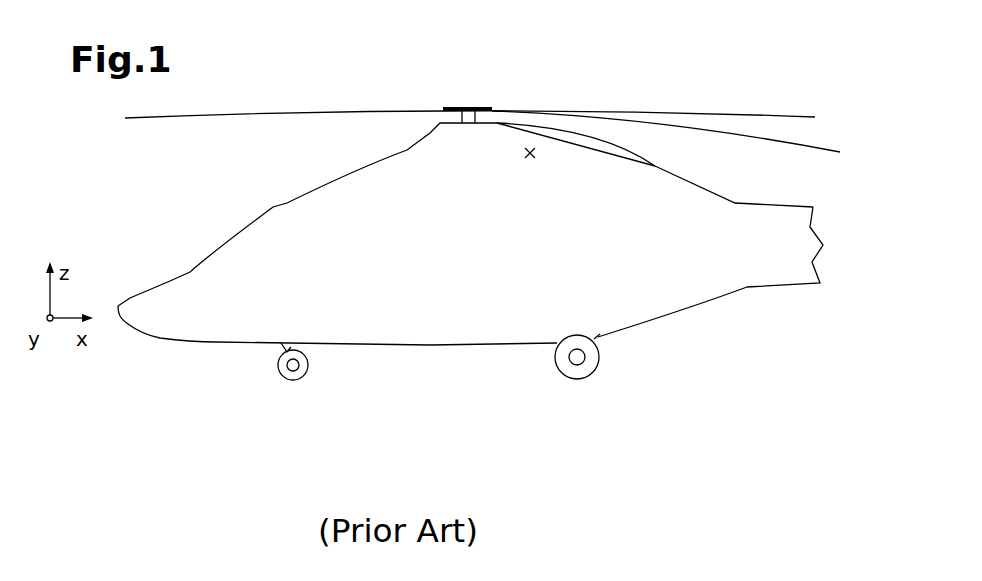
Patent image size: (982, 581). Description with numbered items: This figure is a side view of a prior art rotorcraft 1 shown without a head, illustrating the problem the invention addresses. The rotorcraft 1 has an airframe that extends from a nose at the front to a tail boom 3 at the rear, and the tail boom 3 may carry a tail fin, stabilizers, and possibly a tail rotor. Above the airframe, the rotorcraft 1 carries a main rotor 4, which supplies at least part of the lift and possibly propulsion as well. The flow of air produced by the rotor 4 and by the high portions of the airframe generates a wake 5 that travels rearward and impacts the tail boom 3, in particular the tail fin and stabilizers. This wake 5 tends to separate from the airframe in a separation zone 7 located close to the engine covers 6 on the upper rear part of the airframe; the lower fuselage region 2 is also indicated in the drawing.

The rotorcraft 1 is at (479, 237).
The fuselage 2 is at (500, 346).
The tail boom 3 is at (795, 288).
The main rotor 4 is at (349, 97).
The wake 5 is at (710, 172).
The engine covers 6 is at (532, 161).
The separation zone 7 is at (578, 146).